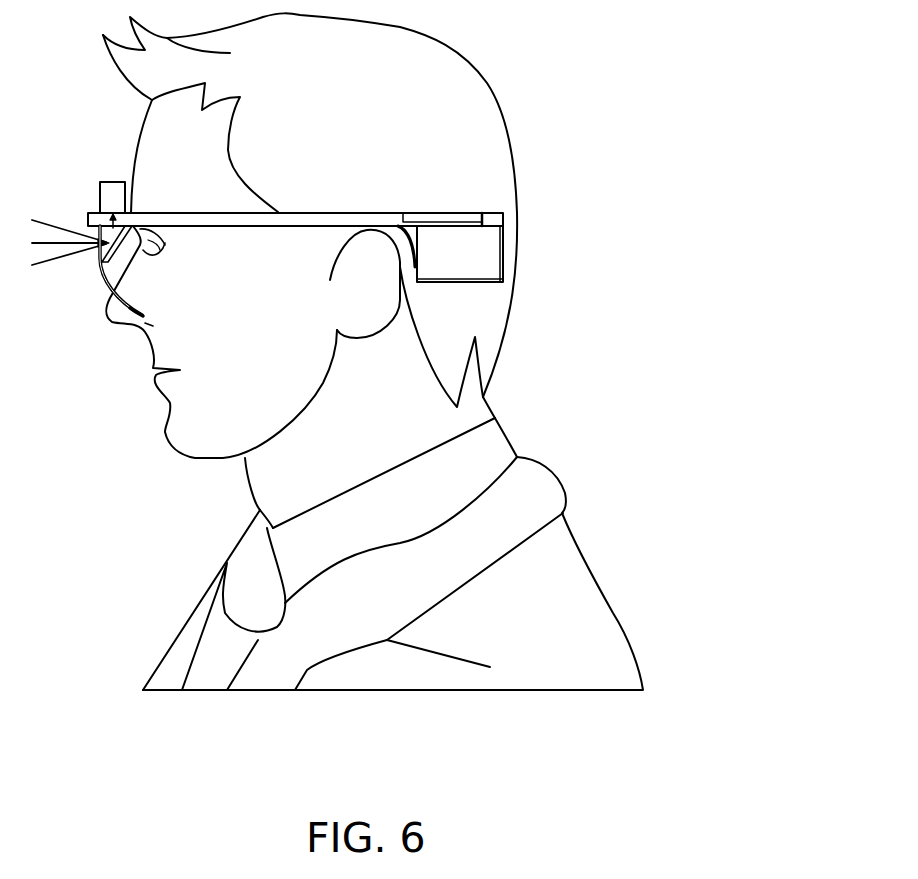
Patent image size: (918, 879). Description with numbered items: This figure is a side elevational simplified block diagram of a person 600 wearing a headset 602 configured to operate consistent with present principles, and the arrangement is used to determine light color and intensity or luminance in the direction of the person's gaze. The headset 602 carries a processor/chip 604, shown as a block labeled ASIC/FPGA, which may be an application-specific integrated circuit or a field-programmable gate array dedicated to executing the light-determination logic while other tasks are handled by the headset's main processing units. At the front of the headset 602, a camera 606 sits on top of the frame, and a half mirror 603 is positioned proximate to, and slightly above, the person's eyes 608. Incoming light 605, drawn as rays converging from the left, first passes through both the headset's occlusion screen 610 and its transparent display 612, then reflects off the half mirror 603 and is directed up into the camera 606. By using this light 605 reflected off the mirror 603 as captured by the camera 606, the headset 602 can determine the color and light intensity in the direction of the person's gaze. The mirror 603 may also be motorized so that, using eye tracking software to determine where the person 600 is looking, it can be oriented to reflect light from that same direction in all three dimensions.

The person 600 is at (487, 82).
The headset 602 is at (327, 212).
The half mirror 603 is at (97, 269).
The processor/chip 604 is at (505, 247).
The light 605 is at (53, 222).
The camera 606 is at (113, 181).
The eyes 608 is at (157, 229).
The occlusion screen 610 is at (110, 310).
The transparent display 612 is at (143, 308).